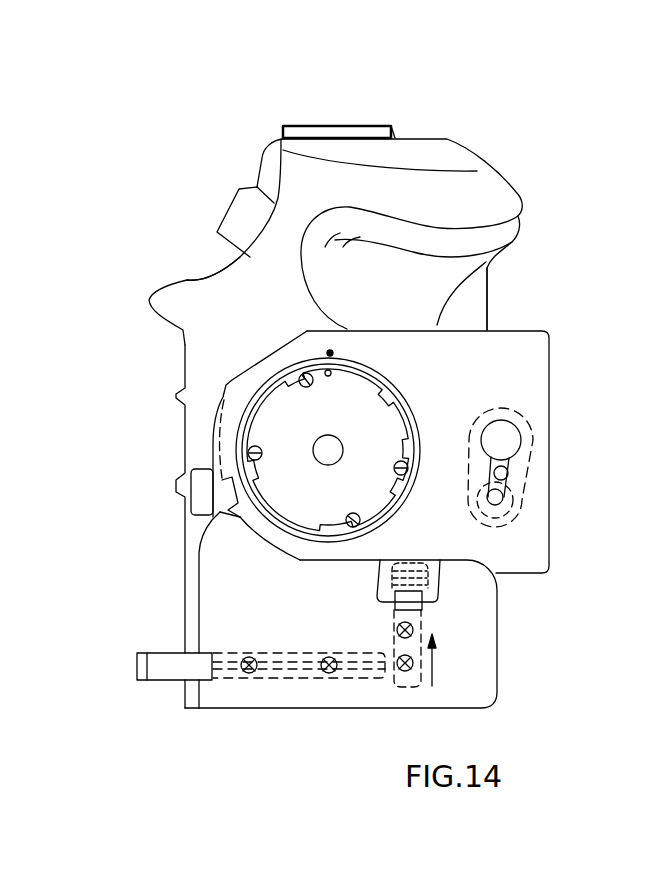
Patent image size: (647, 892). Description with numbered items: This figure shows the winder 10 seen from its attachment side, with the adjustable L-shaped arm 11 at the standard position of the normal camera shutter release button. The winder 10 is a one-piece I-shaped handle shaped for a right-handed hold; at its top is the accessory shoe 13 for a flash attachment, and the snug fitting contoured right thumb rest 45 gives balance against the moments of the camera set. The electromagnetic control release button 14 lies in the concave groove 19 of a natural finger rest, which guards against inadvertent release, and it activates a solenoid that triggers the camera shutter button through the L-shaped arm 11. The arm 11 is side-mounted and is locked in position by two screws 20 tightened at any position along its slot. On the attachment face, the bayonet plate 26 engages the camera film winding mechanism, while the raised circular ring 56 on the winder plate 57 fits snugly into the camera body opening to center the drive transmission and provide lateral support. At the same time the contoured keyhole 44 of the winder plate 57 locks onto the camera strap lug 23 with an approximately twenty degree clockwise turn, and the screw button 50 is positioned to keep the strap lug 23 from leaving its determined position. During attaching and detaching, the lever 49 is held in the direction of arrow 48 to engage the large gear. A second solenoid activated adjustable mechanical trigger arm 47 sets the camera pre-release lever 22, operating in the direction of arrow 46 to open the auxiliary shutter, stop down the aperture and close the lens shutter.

The winder 10 is at (185, 577).
The adjustable L-shaped arm 11 is at (160, 670).
The accessory shoe 13 is at (383, 140).
The electromagnetic control release button 14 is at (240, 208).
The concave groove 19 is at (227, 260).
The screws 20 is at (328, 673).
The camera pre-release lever 22 is at (430, 573).
The strap lug 23 is at (518, 503).
The bayonet plate 26 is at (277, 433).
The contoured keyhole 44 is at (510, 433).
The right thumb rest 45 is at (413, 277).
The arrow 46 is at (449, 660).
The adjustable mechanical trigger arm 47 is at (422, 617).
The arrow 48 is at (188, 498).
The lever 49 is at (195, 512).
The screw button 50 is at (507, 473).
The raised circular ring 56 is at (400, 382).
The winder plate 57 is at (480, 397).